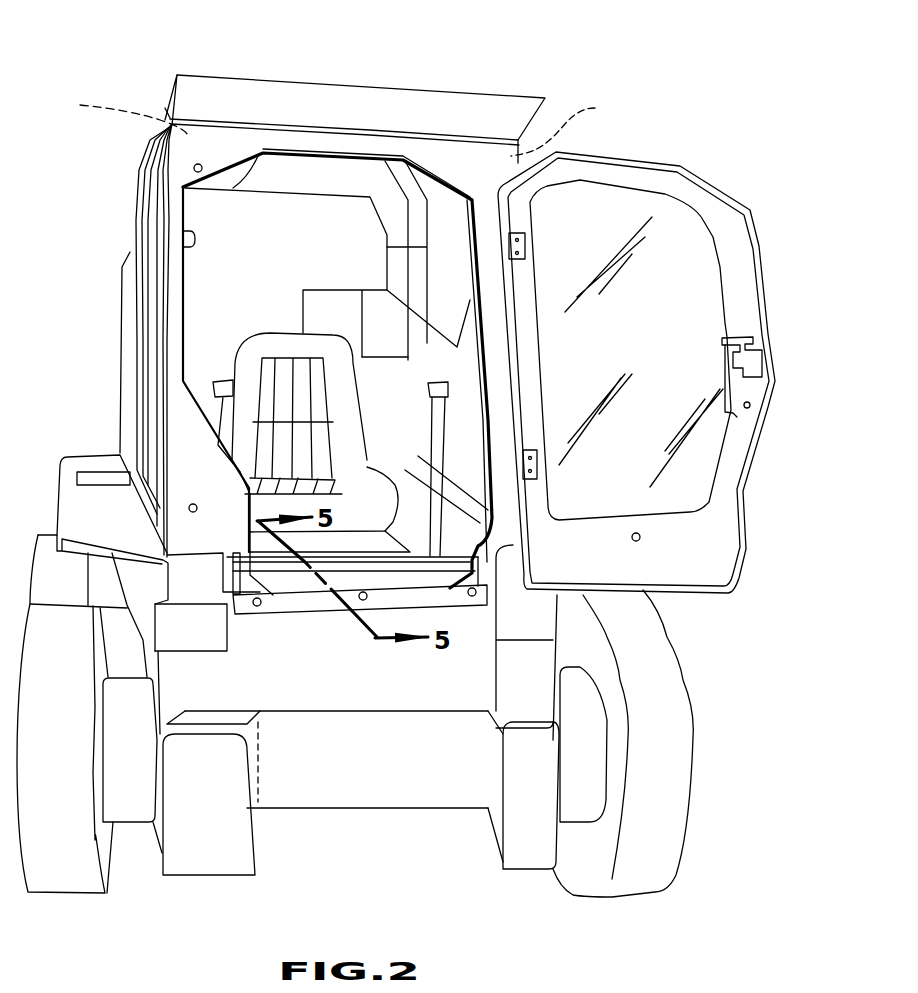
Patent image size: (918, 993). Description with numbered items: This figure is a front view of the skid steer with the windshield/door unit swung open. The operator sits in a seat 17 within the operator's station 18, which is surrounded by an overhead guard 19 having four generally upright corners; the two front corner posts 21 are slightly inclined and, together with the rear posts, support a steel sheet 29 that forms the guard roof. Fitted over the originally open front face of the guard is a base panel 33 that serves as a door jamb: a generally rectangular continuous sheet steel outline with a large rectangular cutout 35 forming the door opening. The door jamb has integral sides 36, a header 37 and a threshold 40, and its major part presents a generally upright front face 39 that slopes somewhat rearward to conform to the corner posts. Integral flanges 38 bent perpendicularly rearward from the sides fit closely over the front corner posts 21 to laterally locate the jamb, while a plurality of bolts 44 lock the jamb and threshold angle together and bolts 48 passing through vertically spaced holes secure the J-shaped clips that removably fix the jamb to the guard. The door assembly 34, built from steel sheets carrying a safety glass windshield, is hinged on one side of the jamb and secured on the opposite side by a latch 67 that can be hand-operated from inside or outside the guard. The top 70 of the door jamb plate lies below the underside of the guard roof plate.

The seat 17 is at (290, 360).
The operator's station 18 is at (282, 282).
The overhead guard 19 is at (166, 111).
The front corner posts 21 is at (340, 123).
The steel sheet 29 is at (272, 81).
The base panel 33 is at (174, 342).
The door assembly 34 is at (746, 536).
The cutout 35 is at (183, 238).
The sides 36 is at (175, 290).
The header 37 is at (333, 143).
The flanges 38 is at (168, 151).
The front face 39 is at (168, 422).
The threshold 40 is at (387, 594).
The bolts 44 is at (360, 599).
The bolts 48 is at (194, 169).
The latch 67 is at (764, 351).
The top 70 is at (222, 127).